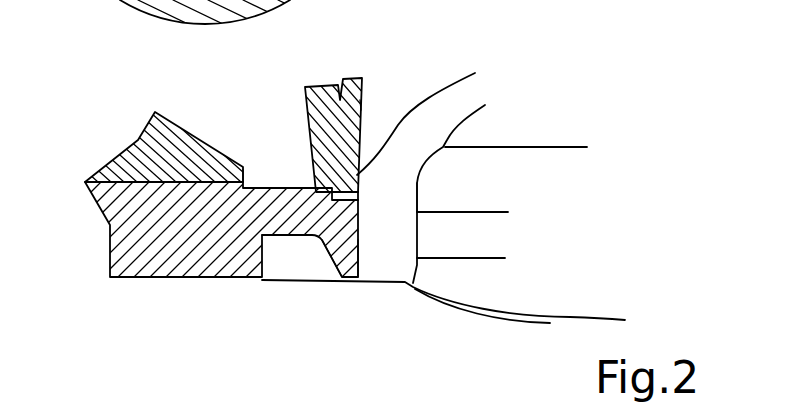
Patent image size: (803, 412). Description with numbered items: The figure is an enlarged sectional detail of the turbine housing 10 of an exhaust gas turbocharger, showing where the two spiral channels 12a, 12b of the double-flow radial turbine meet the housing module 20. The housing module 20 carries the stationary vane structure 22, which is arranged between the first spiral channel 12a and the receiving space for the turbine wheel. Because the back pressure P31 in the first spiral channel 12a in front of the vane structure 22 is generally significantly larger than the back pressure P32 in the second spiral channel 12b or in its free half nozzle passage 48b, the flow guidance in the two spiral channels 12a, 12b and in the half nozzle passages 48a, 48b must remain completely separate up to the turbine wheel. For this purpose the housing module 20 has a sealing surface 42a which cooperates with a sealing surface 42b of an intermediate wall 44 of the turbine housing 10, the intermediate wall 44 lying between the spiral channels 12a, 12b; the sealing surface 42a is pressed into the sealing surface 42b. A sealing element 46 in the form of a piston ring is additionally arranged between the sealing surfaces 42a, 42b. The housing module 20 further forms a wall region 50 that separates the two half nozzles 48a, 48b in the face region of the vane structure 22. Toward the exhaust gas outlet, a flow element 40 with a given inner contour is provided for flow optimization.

The turbine housing 10 is at (584, 96).
The first spiral channel 12a is at (249, 124).
The second spiral channel 12b is at (421, 78).
The housing module 20 is at (110, 258).
The vane structure 22 is at (277, 188).
The flow element 40 is at (572, 316).
The sealing surface of the housing module 42a is at (446, 116).
The sealing surface of the intermediate wall 42b is at (416, 124).
The intermediate wall 44 is at (340, 82).
The sealing element 46 is at (337, 197).
The first half nozzle passage 48a is at (293, 264).
The second half nozzle passage 48b is at (391, 260).
The wall region 50 is at (345, 273).
The back pressure in the first spiral channel P31 is at (166, 131).
The back pressure in the second spiral channel P32 is at (380, 83).